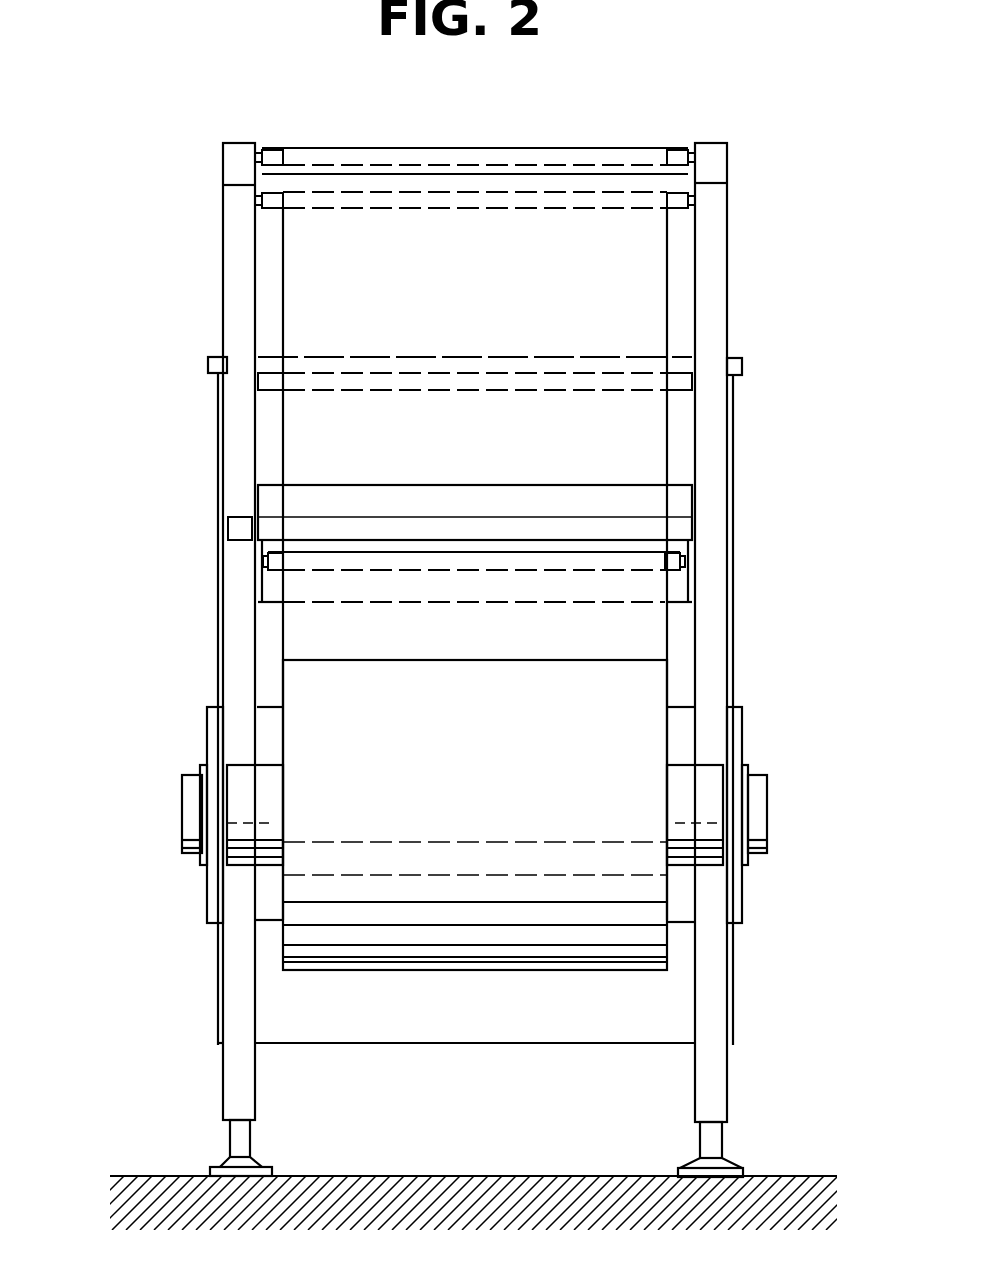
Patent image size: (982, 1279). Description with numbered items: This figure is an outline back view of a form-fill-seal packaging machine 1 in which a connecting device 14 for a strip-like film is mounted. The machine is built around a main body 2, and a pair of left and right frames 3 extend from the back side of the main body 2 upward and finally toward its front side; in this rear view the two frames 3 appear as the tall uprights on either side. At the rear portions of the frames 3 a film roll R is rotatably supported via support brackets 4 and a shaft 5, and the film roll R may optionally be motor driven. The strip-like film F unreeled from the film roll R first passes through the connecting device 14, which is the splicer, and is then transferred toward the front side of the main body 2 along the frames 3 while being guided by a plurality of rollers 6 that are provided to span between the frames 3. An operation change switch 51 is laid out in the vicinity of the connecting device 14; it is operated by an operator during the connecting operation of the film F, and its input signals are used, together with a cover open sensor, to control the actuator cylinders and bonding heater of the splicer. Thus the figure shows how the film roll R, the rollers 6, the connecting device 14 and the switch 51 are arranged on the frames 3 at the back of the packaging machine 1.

The form-fill-seal packaging machine 1 is at (190, 170).
The main body 2 is at (735, 392).
The frames 3 is at (232, 297).
The support brackets 4 is at (215, 732).
The shaft 5 is at (767, 803).
The rollers 6 is at (498, 200).
The connecting device 14 is at (648, 541).
The operation change switch 51 is at (233, 530).
The film F is at (302, 437).
The film roll R is at (488, 962).